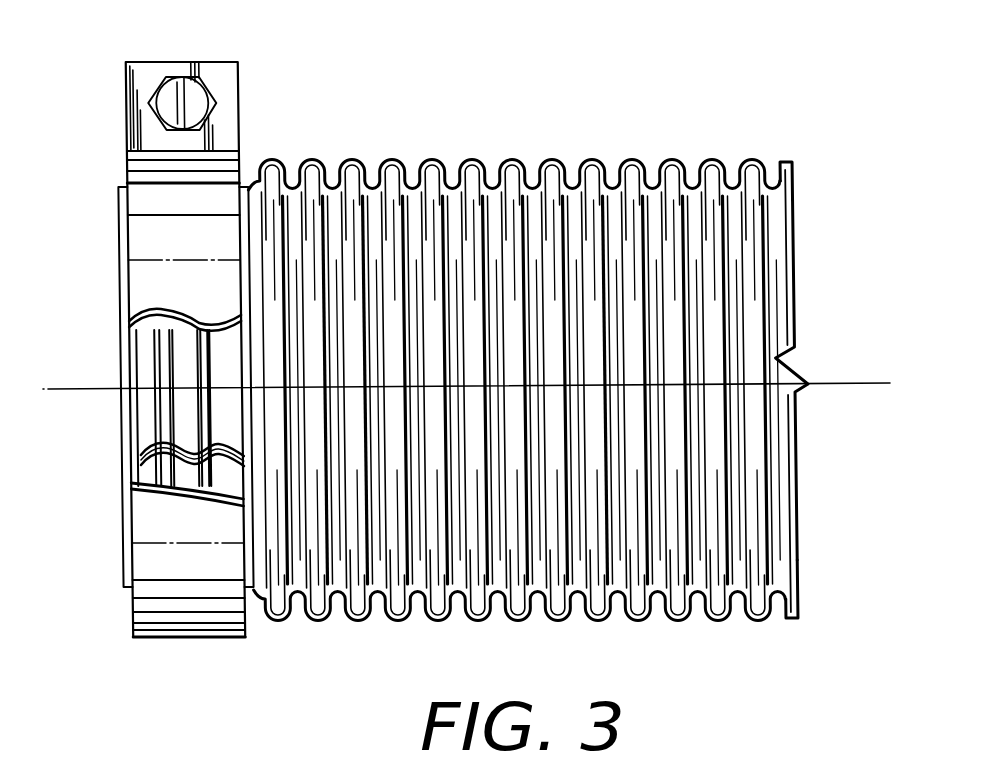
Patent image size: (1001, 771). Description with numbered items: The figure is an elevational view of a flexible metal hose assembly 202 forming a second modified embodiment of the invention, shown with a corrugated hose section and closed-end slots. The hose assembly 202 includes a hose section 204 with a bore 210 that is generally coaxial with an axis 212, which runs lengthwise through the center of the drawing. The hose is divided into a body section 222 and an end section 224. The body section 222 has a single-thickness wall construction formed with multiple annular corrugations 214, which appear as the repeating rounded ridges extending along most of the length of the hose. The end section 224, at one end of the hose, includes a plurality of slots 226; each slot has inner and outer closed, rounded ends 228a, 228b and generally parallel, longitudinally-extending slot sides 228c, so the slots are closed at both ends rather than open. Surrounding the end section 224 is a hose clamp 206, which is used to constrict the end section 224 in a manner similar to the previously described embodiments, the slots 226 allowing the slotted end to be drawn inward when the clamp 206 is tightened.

The flexible hose assembly 202 is at (790, 131).
The hose section 204 is at (793, 162).
The hose clamp 206 is at (240, 62).
The bore 210 is at (797, 280).
The axis 212 is at (850, 385).
The annular corrugations 214 is at (633, 160).
The body section 222 is at (798, 618).
The end section 224 is at (118, 186).
The slots 226 is at (188, 448).
The inner closed, rounded end 228a is at (187, 468).
The outer closed, rounded end 228b is at (133, 498).
The slot sides 228c is at (173, 474).